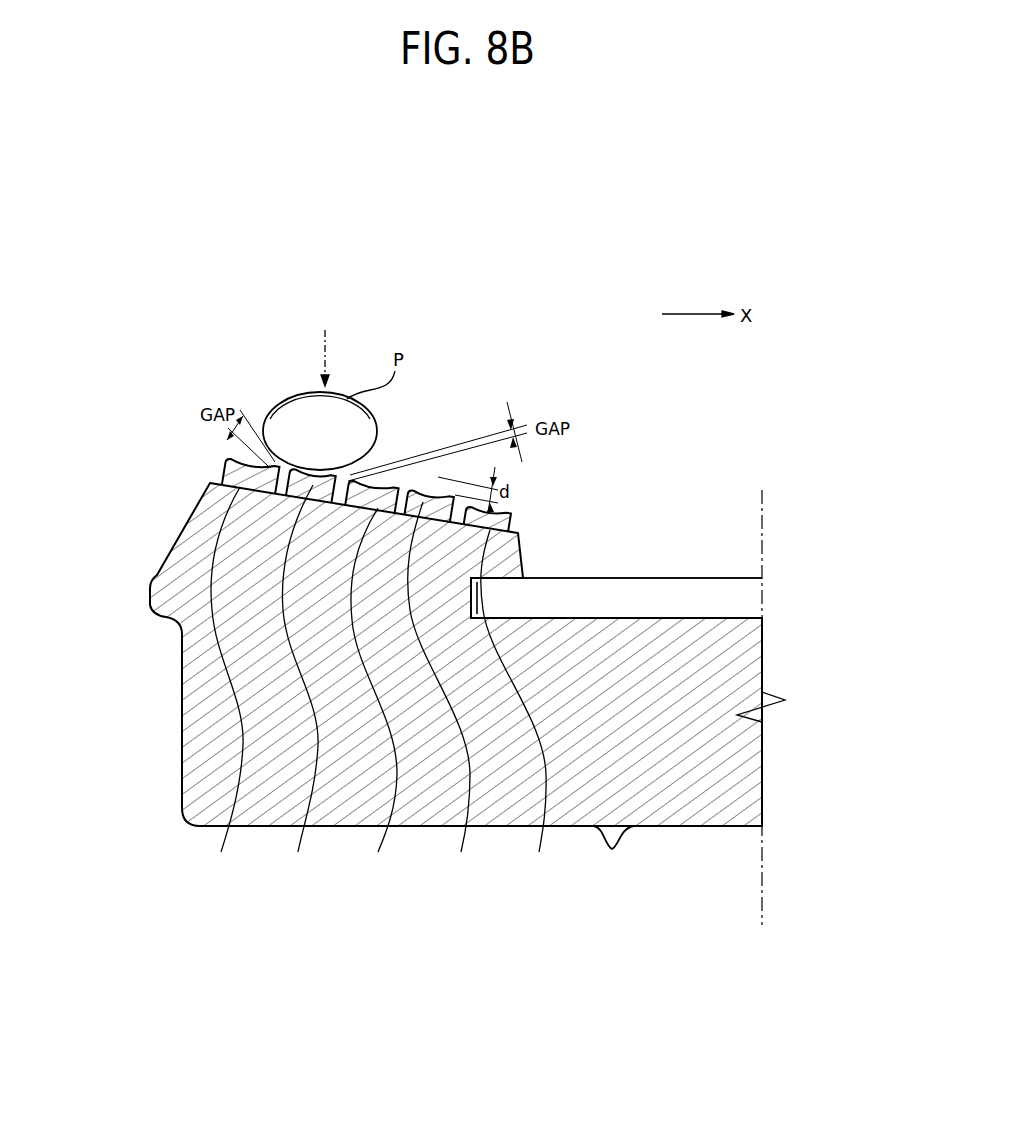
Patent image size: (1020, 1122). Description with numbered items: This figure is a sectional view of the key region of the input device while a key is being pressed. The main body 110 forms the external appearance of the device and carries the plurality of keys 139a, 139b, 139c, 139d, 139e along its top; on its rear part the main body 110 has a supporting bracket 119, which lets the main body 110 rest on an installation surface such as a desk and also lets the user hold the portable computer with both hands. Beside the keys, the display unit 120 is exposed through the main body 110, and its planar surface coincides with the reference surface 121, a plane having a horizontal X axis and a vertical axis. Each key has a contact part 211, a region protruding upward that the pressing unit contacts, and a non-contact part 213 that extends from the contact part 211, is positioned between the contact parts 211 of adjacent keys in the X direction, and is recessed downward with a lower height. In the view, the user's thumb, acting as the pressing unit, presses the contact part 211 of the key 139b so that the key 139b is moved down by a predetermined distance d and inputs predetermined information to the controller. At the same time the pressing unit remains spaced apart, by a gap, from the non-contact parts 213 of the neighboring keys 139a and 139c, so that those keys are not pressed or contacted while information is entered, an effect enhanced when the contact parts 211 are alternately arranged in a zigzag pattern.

The main body 110 is at (176, 626).
The supporting bracket 119 is at (620, 838).
The display unit 120 is at (673, 597).
The reference surface 121 is at (573, 578).
The key 139a is at (221, 852).
The key 139b is at (298, 852).
The key 139c is at (378, 852).
The key 139d is at (461, 852).
The key 139e is at (539, 852).
The contact part 211 is at (298, 467).
The non-contact part 213 is at (246, 459).